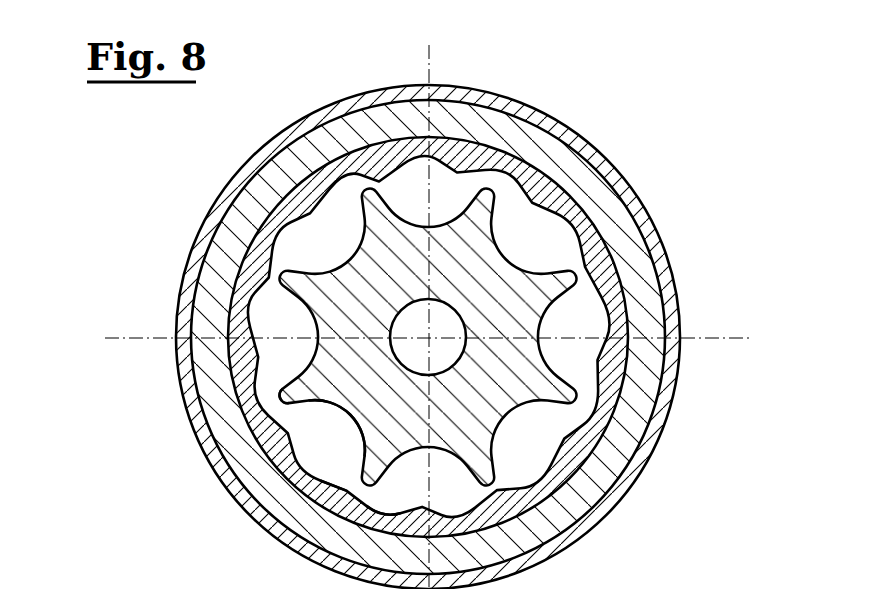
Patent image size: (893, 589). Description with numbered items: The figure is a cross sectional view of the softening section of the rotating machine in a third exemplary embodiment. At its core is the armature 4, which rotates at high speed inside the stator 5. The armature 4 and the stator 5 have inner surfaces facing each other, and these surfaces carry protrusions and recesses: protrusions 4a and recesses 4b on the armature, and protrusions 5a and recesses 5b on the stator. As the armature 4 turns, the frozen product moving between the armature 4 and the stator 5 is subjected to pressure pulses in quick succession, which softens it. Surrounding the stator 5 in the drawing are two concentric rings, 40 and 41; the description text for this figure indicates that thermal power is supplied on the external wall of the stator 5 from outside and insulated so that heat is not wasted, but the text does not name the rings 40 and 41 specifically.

The armature 4 is at (333, 308).
The protrusions of the armature 4a is at (290, 398).
The recesses of the armature 4b is at (352, 420).
The stator 5 is at (272, 276).
The protrusions of the stator 5a is at (335, 483).
The recesses of the stator 5b is at (356, 516).
The inner housing ring 40 is at (310, 140).
The outer housing ring 41 is at (343, 106).